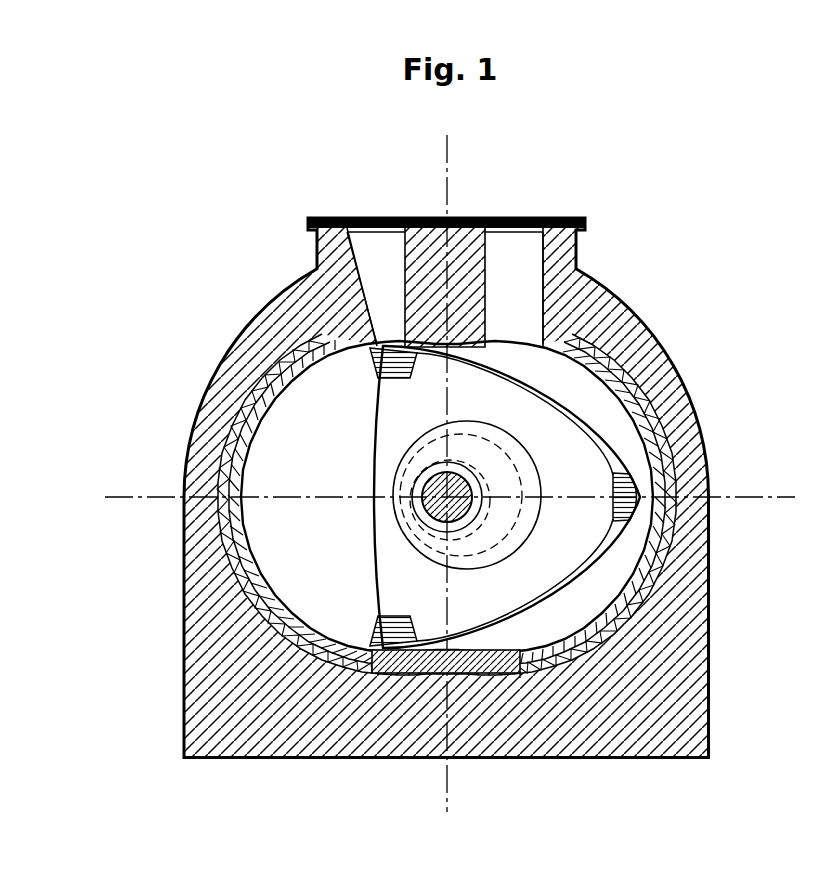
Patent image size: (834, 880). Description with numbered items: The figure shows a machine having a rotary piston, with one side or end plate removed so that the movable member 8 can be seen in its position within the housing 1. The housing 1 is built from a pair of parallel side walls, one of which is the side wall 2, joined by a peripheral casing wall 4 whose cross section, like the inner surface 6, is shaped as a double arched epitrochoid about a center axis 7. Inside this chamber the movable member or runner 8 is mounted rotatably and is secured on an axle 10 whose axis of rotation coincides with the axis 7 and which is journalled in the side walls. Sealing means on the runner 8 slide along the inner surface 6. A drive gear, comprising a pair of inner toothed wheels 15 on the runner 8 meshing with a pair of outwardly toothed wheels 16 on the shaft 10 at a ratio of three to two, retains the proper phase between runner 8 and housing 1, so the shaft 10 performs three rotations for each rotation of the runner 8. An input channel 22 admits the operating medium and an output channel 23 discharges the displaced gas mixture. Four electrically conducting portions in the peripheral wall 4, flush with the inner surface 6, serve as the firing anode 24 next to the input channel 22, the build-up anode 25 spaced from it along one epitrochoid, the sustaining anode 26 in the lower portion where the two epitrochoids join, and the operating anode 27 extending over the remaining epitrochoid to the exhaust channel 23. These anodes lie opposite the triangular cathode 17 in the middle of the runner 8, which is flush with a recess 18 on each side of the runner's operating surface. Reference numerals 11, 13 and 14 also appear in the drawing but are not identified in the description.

The housing 1 is at (700, 768).
The side wall 2 is at (397, 208).
The peripheral casing wall 4 is at (133, 497).
The inner surface 6 is at (266, 453).
The center axis 7 is at (165, 497).
The movable member 8 is at (314, 484).
The axle 10 is at (456, 507).
The apex seal 11 is at (690, 483).
The trochoid liner 13 is at (297, 412).
The working chambers 14 is at (490, 365).
The inner toothed wheels 15 is at (577, 273).
The outwardly toothed wheels 16 is at (455, 458).
The cathode 17 is at (360, 403).
The recess 18 is at (382, 455).
The input channel 22 is at (530, 250).
The output channel 23 is at (380, 250).
The firing anode 24 is at (460, 427).
The build-up anode 25 is at (690, 448).
The sustaining anode 26 is at (432, 668).
The operating anode 27 is at (222, 472).